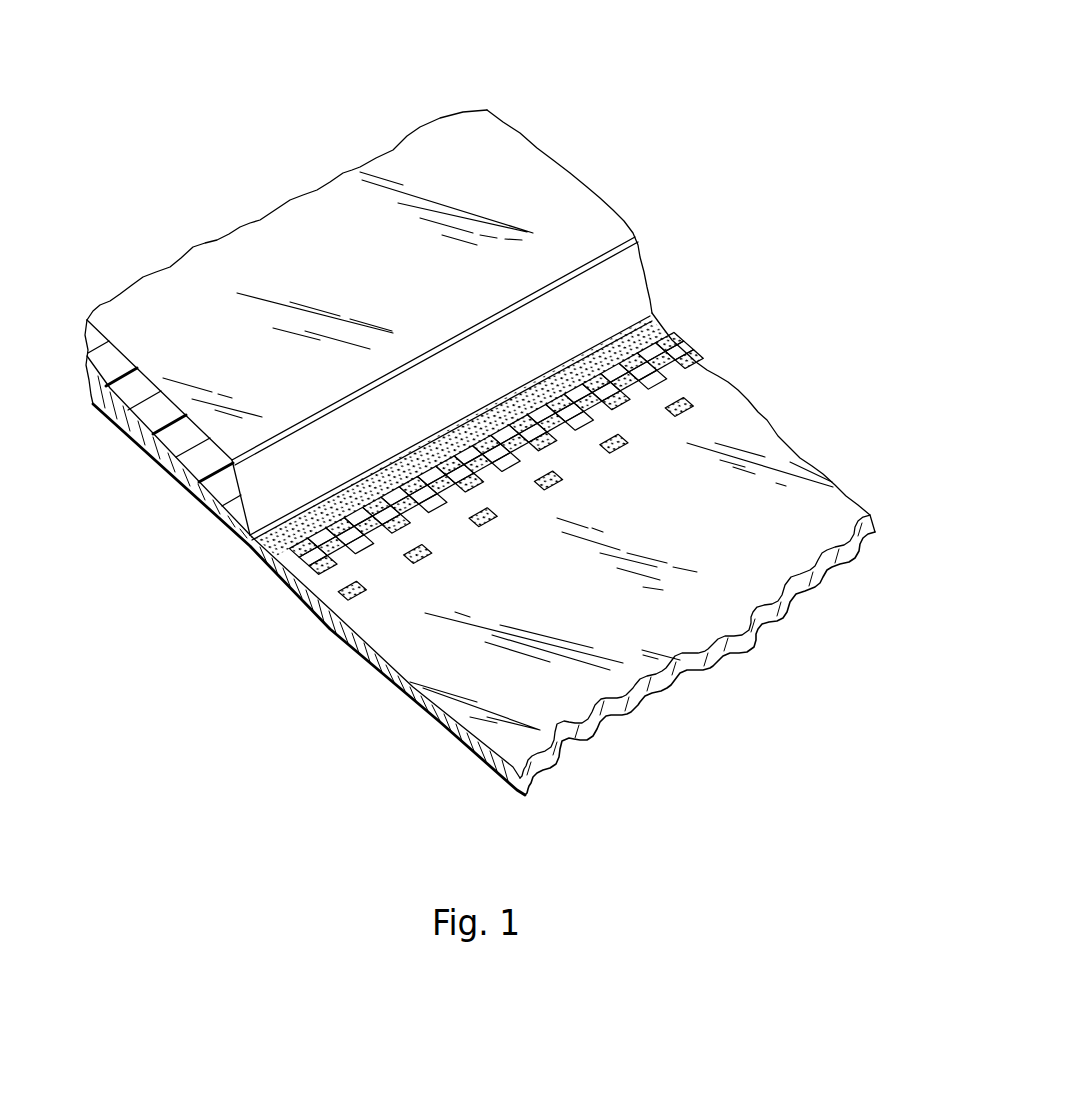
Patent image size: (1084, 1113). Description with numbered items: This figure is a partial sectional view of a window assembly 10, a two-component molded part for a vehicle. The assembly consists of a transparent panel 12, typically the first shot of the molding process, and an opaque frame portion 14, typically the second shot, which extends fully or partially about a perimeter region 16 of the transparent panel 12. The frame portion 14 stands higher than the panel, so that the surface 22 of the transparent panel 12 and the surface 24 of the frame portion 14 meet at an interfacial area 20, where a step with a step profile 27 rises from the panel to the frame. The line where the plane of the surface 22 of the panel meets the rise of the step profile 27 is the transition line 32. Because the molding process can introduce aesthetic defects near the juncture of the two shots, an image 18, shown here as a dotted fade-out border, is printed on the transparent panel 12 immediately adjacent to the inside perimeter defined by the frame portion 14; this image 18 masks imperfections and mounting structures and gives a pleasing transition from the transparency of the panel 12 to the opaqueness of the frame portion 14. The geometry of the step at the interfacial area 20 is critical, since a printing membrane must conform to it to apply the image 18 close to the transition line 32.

The window assembly 10 is at (680, 73).
The transparent panel 12 is at (750, 545).
The frame portion 14 is at (378, 283).
The perimeter region 16 is at (133, 459).
The image 18 is at (384, 581).
The interfacial area 20 is at (656, 304).
The surface of the transparent panel 22 is at (748, 430).
The surface of the frame portion 24 is at (522, 178).
The step profile 27 is at (630, 283).
The transition line 32 is at (303, 506).